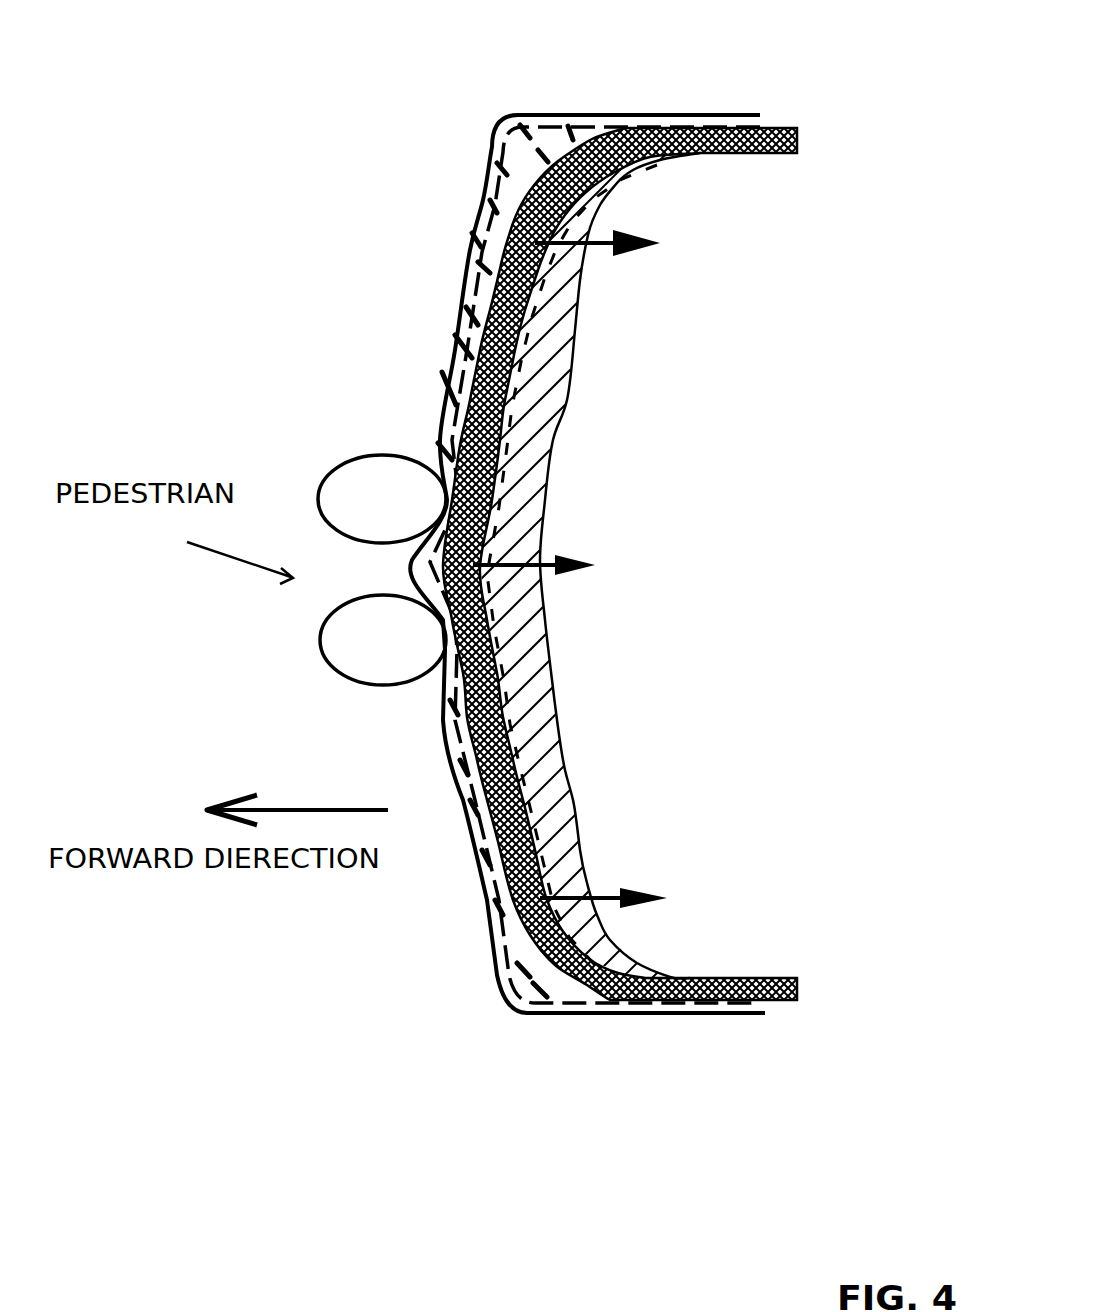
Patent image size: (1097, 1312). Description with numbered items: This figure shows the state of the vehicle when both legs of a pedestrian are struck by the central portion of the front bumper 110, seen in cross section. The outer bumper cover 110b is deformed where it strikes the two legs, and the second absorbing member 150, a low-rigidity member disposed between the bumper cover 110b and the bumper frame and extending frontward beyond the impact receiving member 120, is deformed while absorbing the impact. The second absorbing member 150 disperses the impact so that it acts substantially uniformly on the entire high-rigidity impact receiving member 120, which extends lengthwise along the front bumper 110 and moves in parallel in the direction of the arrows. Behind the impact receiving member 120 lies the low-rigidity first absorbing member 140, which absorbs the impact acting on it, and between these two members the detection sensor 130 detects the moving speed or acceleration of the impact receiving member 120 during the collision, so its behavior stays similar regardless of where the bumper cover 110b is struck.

The front bumper 110 is at (551, 108).
The bumper cover 110b is at (490, 145).
The impact receiving member 120 is at (518, 198).
The detection sensor 130 is at (553, 730).
The first absorbing member 140 is at (590, 276).
The second absorbing member 150 is at (447, 329).